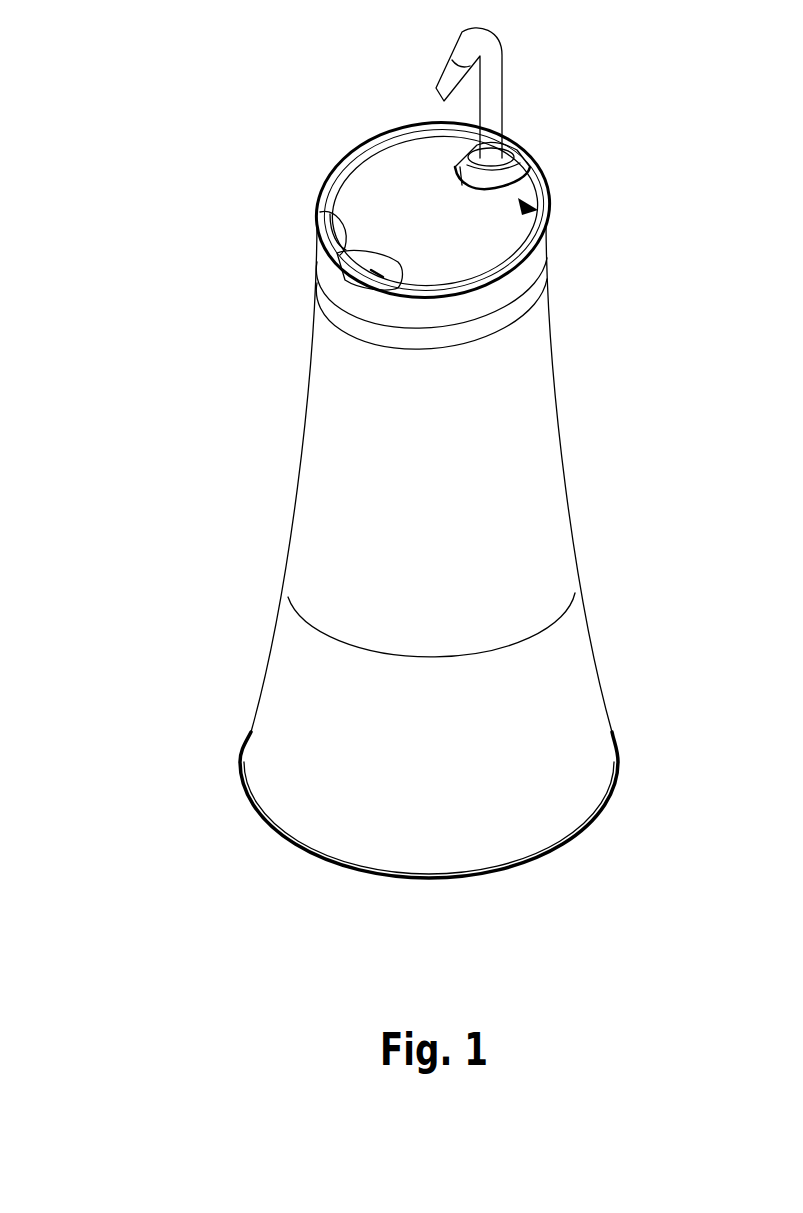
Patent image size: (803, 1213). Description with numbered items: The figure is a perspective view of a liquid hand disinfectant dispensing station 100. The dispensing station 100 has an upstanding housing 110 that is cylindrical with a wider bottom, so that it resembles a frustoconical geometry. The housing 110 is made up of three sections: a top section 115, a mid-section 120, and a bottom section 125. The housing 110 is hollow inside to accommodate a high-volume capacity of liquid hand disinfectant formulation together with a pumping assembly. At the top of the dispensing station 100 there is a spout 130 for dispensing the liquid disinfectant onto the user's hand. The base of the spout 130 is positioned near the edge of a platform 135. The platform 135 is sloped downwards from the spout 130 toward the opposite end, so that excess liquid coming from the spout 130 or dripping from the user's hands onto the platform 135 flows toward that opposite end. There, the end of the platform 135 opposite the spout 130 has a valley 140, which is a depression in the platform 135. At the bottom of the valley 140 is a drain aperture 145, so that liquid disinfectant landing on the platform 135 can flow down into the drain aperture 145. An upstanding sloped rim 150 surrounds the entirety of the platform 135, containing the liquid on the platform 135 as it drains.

The dispensing station 100 is at (176, 93).
The housing 110 is at (571, 527).
The top section 115 is at (550, 252).
The mid-section 120 is at (554, 380).
The bottom section 125 is at (594, 652).
The spout 130 is at (503, 85).
The platform 135 is at (403, 173).
The valley 140 is at (320, 212).
The drain aperture 145 is at (347, 280).
The sloped rim 150 is at (425, 137).